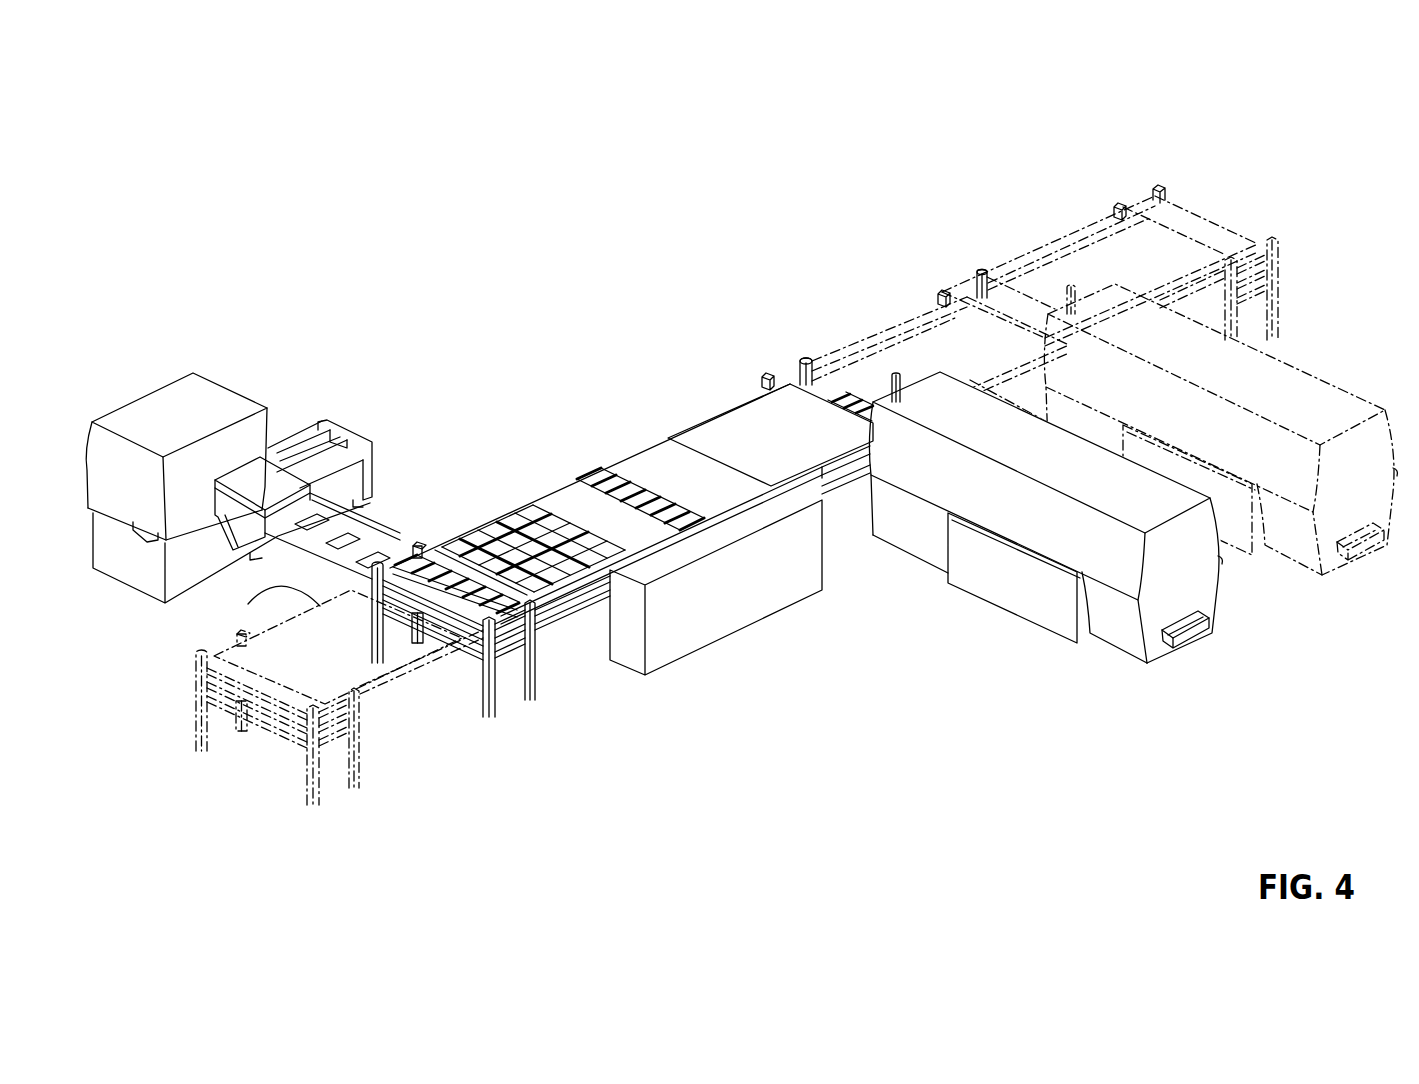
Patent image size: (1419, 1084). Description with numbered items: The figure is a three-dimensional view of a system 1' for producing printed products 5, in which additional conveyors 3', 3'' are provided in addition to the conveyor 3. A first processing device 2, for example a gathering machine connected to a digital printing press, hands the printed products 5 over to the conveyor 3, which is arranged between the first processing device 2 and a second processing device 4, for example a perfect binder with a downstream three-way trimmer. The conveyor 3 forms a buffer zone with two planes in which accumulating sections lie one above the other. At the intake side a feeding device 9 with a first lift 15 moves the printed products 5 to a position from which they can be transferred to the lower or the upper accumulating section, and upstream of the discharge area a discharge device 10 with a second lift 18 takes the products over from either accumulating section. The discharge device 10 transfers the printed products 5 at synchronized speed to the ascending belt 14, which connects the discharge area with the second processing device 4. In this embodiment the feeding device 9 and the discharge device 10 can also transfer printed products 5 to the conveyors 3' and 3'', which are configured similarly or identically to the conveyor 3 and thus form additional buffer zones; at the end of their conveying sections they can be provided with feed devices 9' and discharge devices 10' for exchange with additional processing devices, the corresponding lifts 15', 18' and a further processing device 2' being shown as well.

The second processing device 4 is at (213, 387).
The ascending belt 14 is at (340, 522).
The printed products 5 is at (532, 517).
The discharge device 10 is at (442, 651).
The second lift 18 is at (567, 638).
The system 1' is at (687, 500).
The conveyor 3 is at (770, 406).
The feeding device 9 is at (756, 347).
The first lift 15 is at (784, 333).
The additional conveyor 3' is at (1045, 302).
The feed device 9' is at (1019, 216).
The stop post (phantom station) 15' is at (1051, 198).
The second processing machine (phantom) 2' is at (1228, 429).
The first processing device 2 is at (1084, 517).
The additional conveyor 3'' is at (327, 668).
The discharge device 10' is at (329, 773).
The support post (phantom) 18' is at (391, 738).